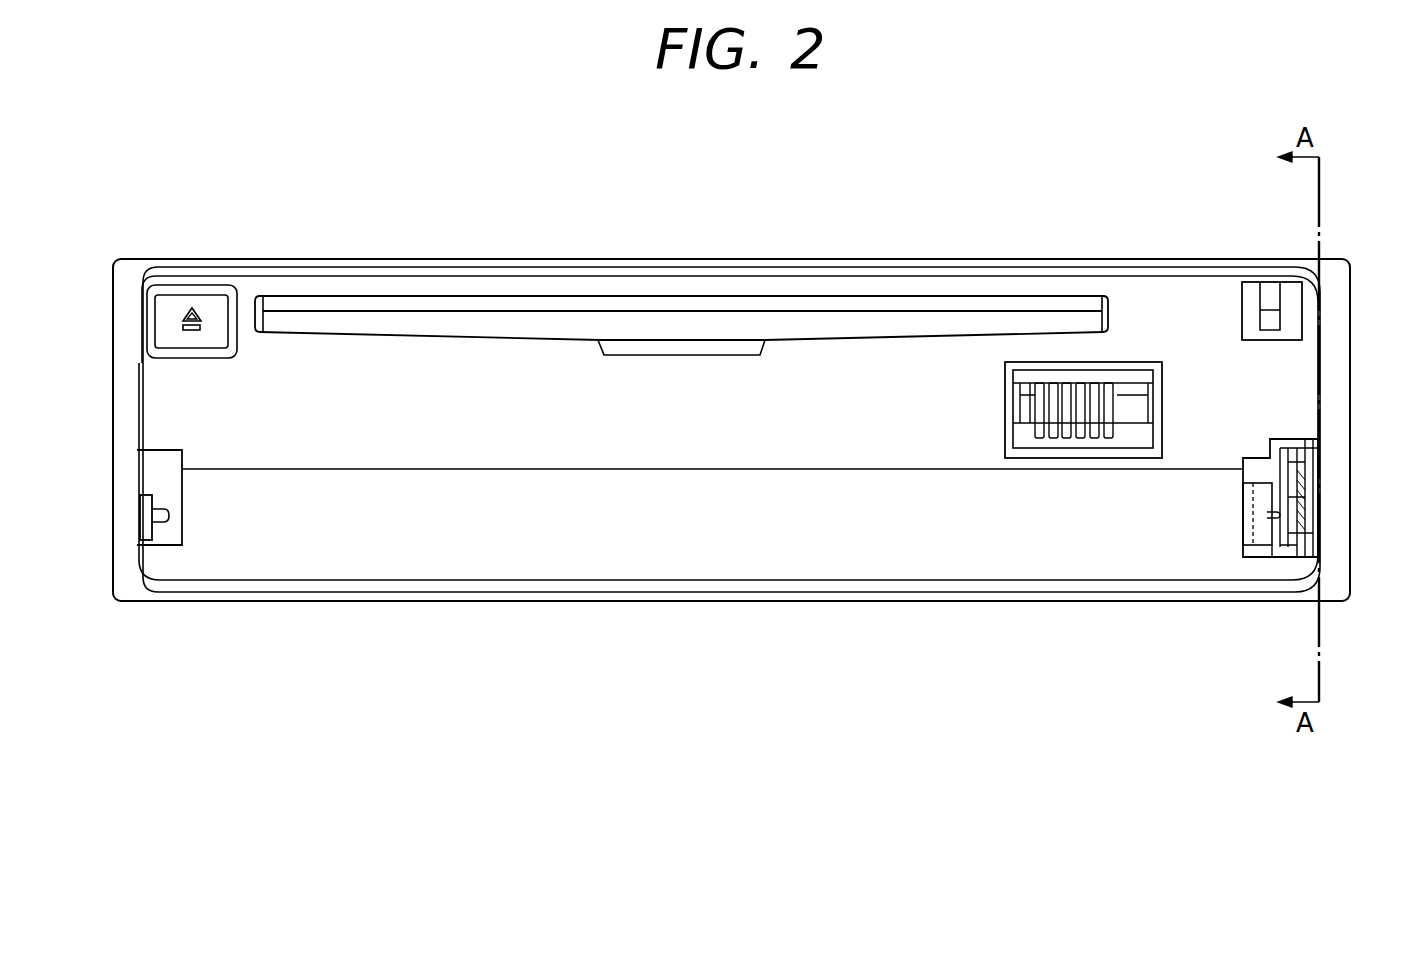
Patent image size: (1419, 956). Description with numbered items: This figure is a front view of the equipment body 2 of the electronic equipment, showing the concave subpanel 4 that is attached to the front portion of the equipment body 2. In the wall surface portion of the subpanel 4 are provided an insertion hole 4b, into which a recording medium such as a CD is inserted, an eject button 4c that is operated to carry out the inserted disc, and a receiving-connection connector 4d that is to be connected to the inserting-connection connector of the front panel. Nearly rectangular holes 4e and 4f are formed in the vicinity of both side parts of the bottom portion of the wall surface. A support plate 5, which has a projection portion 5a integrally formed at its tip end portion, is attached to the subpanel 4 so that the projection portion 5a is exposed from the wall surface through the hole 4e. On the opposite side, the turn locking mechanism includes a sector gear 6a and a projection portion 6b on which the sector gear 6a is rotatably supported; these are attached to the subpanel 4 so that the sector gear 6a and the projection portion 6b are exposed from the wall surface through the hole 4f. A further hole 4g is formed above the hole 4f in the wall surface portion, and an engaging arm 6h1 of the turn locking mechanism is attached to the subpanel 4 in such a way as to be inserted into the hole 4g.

The equipment body 2 is at (735, 236).
The subpanel 4 is at (1343, 284).
The insertion hole 4b is at (687, 326).
The eject button 4c is at (212, 300).
The receiving-connection connector 4d is at (1012, 381).
The hole 4e is at (165, 450).
The hole 4f is at (1268, 445).
The hole 4g is at (1292, 320).
The support plate 5 is at (145, 528).
The projection portion 5a is at (170, 515).
The sector gear 6a is at (1272, 560).
The projection portion 6b is at (1243, 520).
The engaging arm 6h1 is at (1262, 298).